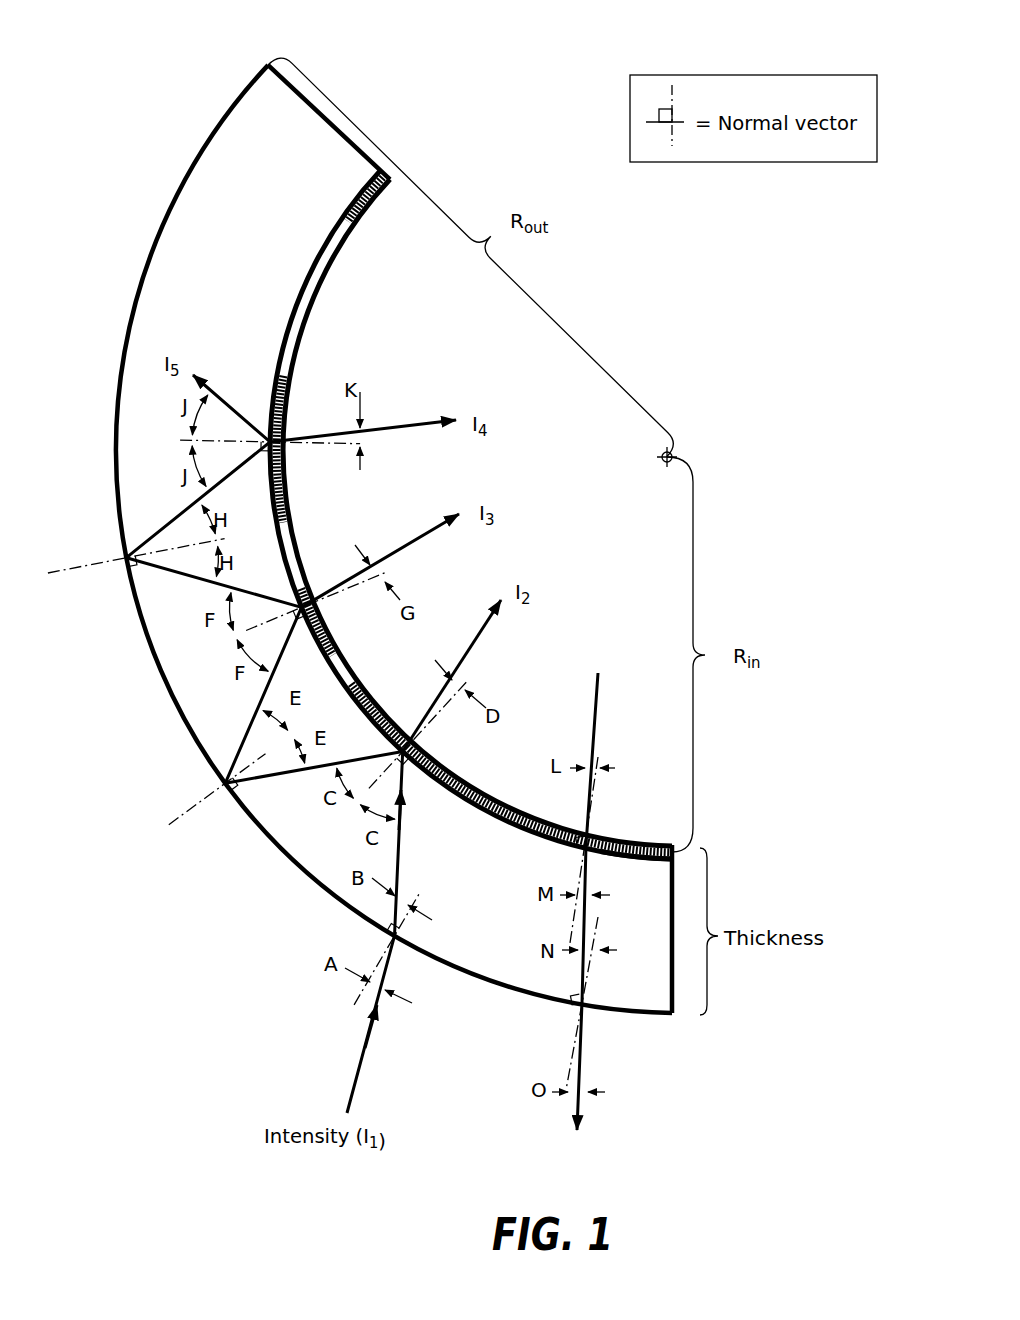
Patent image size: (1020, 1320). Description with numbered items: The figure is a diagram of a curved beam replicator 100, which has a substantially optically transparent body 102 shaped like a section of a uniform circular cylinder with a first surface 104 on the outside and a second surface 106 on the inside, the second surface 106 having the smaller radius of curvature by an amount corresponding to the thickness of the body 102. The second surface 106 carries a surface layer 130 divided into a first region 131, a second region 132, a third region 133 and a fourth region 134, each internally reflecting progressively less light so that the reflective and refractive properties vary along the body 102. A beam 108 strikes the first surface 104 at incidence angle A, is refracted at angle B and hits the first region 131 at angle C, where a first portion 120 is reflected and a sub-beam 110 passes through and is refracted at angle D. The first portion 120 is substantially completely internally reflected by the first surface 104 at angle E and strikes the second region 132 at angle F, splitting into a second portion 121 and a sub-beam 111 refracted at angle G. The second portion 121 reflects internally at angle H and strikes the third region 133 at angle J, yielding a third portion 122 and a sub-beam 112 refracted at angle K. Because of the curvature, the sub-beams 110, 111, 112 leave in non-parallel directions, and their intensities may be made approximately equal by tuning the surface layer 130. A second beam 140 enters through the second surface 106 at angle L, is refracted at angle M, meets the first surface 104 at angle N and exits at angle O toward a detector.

The curved beam replicator 100 is at (189, 82).
The body 102 is at (460, 539).
The first surface 104 is at (164, 218).
The second surface 106 is at (332, 284).
The beam 108 is at (350, 1075).
The sub-beam 110 is at (494, 624).
The sub-beam 111 is at (440, 530).
The sub-beam 112 is at (430, 414).
The first portion 120 is at (246, 786).
The second portion 121 is at (200, 586).
The third portion 122 is at (200, 378).
The surface layer 130 is at (630, 838).
The first region 131 is at (452, 775).
The second region 132 is at (342, 640).
The third region 133 is at (289, 492).
The fourth region 134 is at (305, 339).
The second beam 140 is at (606, 702).